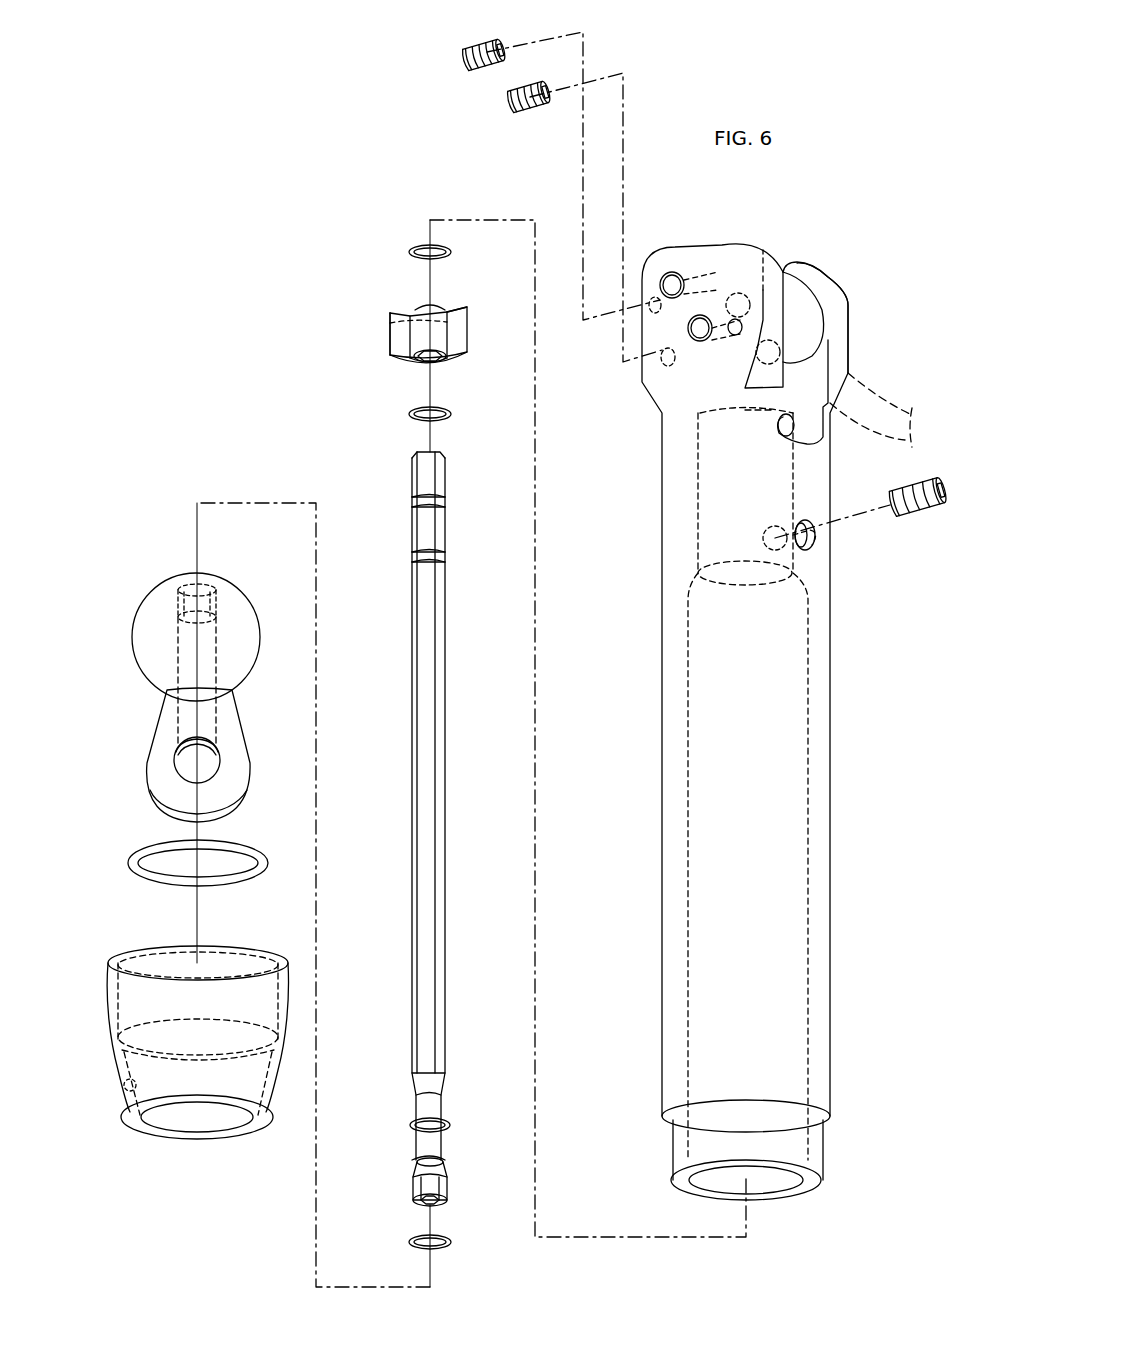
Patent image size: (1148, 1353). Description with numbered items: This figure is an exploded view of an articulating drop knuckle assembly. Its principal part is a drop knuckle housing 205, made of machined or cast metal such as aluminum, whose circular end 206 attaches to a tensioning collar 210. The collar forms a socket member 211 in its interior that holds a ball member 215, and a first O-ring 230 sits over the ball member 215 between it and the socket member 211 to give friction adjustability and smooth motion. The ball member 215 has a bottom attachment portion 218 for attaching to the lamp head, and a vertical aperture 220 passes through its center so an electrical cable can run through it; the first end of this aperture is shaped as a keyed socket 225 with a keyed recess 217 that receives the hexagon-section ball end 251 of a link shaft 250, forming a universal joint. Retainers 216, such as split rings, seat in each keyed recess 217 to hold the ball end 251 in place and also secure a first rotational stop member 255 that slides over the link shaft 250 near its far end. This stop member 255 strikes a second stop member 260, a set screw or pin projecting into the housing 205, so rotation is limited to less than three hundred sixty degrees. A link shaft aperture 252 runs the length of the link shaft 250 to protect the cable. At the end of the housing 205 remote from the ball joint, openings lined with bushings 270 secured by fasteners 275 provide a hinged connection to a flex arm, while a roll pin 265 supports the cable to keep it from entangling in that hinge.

The drop knuckle housing 205 is at (833, 678).
The circular end 206 is at (815, 1157).
The tensioning collar 210 is at (118, 1102).
The socket member 211 is at (125, 1087).
The ball member 215 is at (140, 680).
The retainers 216 is at (412, 253).
The keyed recess 217 is at (412, 505).
The attachment portion 218 is at (162, 762).
The aperture 220 is at (178, 656).
The keyed socket 225 is at (178, 607).
The first O-ring 230 is at (168, 880).
The link shaft 250 is at (446, 920).
The ball end 251 is at (449, 1186).
The link shaft aperture 252 is at (422, 1201).
The first rotational stop member 255 is at (410, 318).
The second stop member 260 is at (905, 518).
The roll pin 265 is at (828, 300).
The bushings 270 is at (672, 272).
The fasteners 275 is at (482, 94).